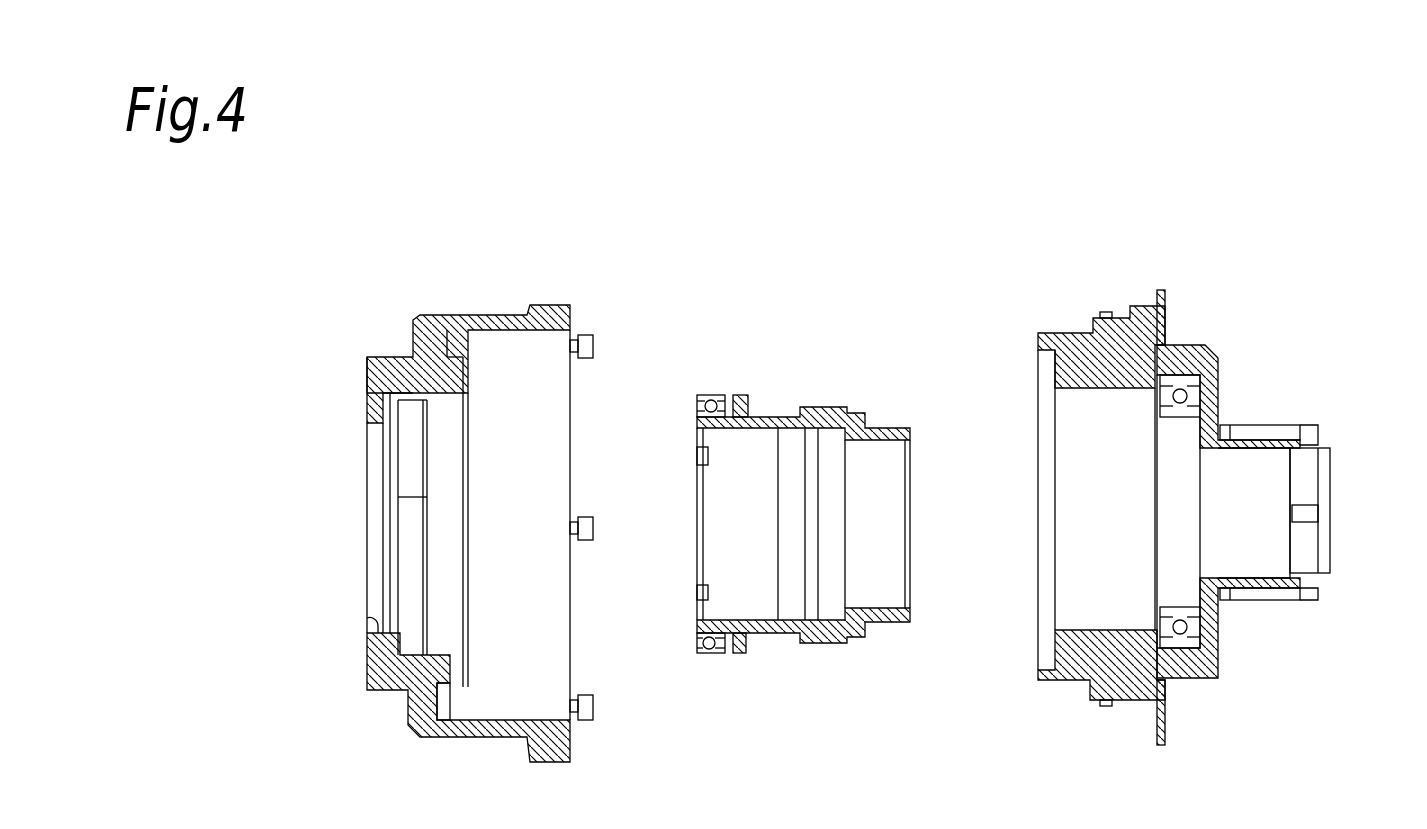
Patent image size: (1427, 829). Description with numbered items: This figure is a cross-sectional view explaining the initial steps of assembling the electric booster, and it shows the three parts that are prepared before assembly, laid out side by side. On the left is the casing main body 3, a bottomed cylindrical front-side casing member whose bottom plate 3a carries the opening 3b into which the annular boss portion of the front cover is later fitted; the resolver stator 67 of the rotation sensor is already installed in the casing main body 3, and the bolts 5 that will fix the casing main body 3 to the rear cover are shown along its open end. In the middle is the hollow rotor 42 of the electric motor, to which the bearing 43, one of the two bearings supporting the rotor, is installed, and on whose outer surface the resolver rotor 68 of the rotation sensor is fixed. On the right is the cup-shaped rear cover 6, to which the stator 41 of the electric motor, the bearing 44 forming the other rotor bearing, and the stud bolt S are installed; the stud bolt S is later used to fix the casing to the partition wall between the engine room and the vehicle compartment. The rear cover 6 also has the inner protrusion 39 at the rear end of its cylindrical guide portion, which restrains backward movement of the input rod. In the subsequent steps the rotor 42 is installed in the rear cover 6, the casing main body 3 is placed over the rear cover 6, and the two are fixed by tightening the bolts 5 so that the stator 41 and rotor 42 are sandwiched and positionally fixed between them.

The casing main body 3 is at (481, 312).
The bottom plate 3a is at (370, 393).
The opening 3b is at (367, 618).
The bolts 5 is at (593, 347).
The rear cover 6 is at (1218, 343).
The inner protrusion 39 is at (1325, 512).
The stator 41 is at (1068, 345).
The rotor 42 is at (790, 415).
The bearing 43 is at (713, 395).
The bearing 44 is at (1185, 642).
The resolver stator 67 is at (452, 676).
The resolver rotor 68 is at (740, 655).
The stud bolt S is at (1276, 430).